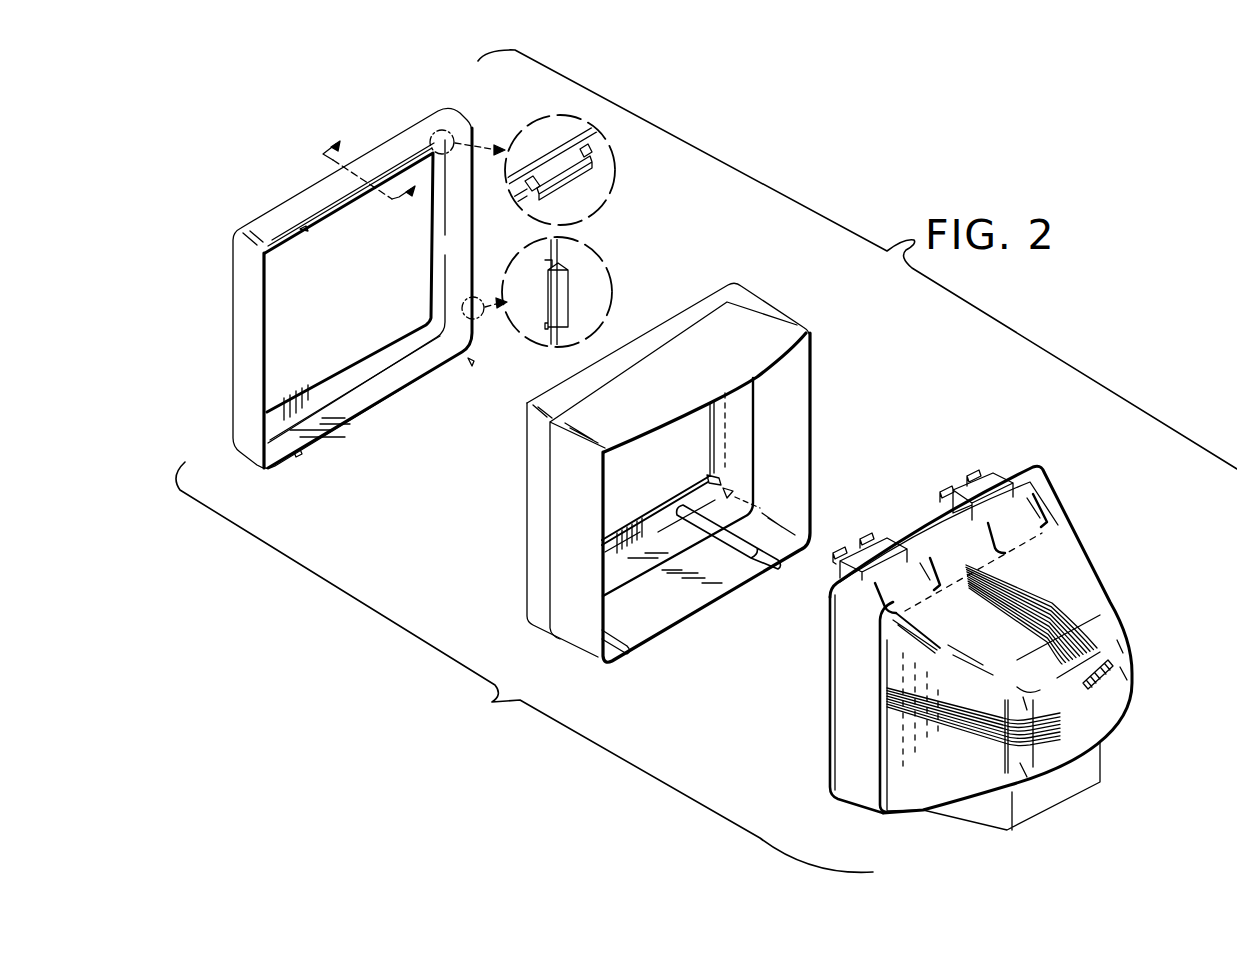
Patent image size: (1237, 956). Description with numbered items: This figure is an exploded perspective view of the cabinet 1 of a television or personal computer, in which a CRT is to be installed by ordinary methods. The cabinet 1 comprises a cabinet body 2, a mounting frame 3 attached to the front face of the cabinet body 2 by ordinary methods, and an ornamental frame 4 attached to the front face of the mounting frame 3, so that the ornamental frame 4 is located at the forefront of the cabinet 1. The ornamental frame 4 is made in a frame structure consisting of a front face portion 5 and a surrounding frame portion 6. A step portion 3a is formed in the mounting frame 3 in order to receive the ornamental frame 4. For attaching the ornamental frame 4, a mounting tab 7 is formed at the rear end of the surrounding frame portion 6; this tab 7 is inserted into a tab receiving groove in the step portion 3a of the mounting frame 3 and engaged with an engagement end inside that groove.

The cabinet 1 is at (706, 461).
The cabinet body 2 is at (853, 783).
The mounting frame 3 is at (575, 632).
The step portion 3a is at (650, 347).
The ornamental frame 4 is at (250, 443).
The front face portion 5 is at (372, 357).
The surrounding frame portion 6 is at (388, 389).
The mounting tab 7 is at (558, 170).